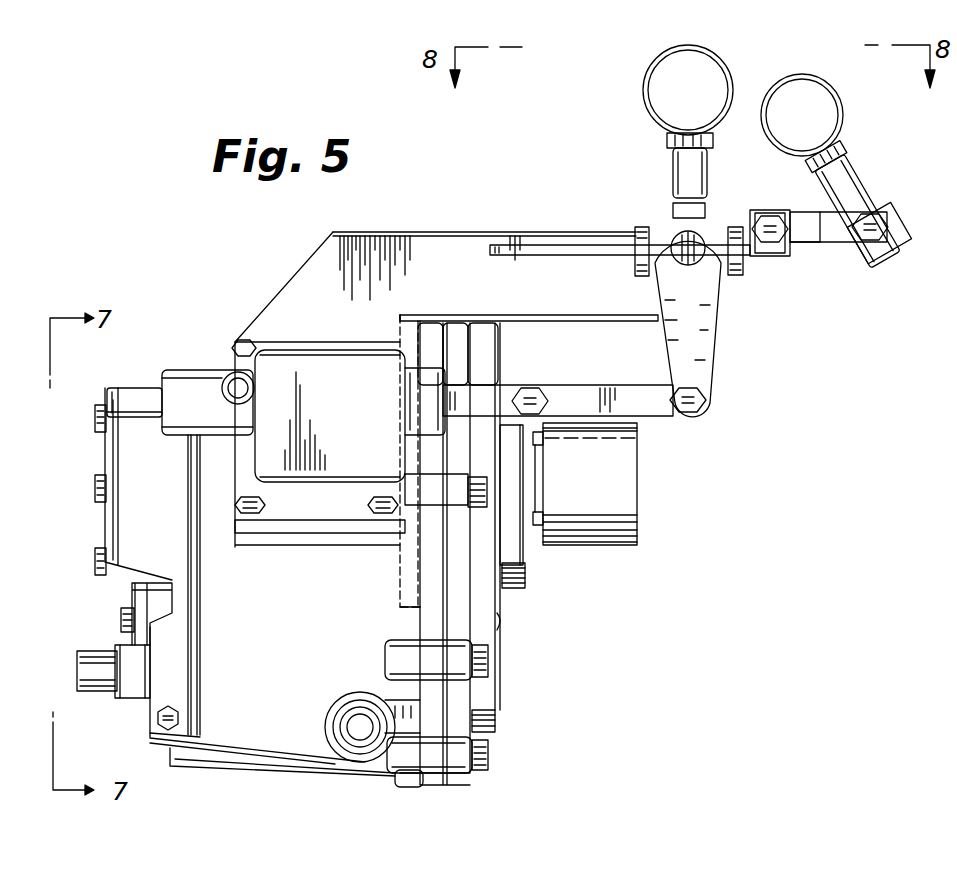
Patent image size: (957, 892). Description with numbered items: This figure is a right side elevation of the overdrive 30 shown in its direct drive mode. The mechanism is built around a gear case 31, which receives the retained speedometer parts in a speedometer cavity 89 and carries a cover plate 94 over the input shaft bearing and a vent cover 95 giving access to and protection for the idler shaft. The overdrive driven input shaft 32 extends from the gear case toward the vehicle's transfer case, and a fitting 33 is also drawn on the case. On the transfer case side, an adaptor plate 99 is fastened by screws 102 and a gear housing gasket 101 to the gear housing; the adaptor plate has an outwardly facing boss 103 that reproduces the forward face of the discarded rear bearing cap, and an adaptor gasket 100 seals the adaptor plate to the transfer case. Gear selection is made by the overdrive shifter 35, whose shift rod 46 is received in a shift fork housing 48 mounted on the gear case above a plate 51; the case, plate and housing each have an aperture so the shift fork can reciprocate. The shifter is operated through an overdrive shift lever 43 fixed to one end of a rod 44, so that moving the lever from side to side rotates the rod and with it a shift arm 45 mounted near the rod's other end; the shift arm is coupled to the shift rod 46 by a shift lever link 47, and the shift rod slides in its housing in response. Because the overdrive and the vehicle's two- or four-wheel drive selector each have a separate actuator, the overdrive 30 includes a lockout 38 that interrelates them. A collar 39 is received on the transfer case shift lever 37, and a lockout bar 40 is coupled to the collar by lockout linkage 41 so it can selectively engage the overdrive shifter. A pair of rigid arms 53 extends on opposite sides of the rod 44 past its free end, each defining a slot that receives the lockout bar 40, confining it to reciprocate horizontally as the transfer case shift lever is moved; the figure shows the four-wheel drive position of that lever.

The overdrive 30 is at (232, 780).
The gear case 31 is at (297, 758).
The overdrive driven input shaft 32 is at (640, 492).
The inlet fitting 33 is at (86, 692).
The overdrive shifter 35 is at (640, 208).
The transfer case shift lever 37 is at (858, 176).
The lockout 38 is at (772, 272).
The collar 39 is at (899, 210).
The lockout bar 40 is at (547, 256).
The lockout linkage 41 is at (826, 244).
The overdrive shift lever 43 is at (708, 175).
The rod 44 is at (695, 264).
The shift arm 45 is at (716, 366).
The shift rod 46 is at (148, 365).
The shift lever link 47 is at (622, 378).
The shift fork housing 48 is at (272, 357).
The plate 51 is at (368, 250).
The rigid arms 53 is at (645, 280).
The speedometer cavity 89 is at (360, 736).
The cover plate 94 is at (110, 443).
The vent cover 95 is at (121, 618).
The adaptor plate 99 is at (468, 786).
The adaptor gasket 100 is at (503, 622).
The gear housing gasket 101 is at (447, 788).
The screws 102 is at (475, 512).
The boss 103 is at (528, 578).